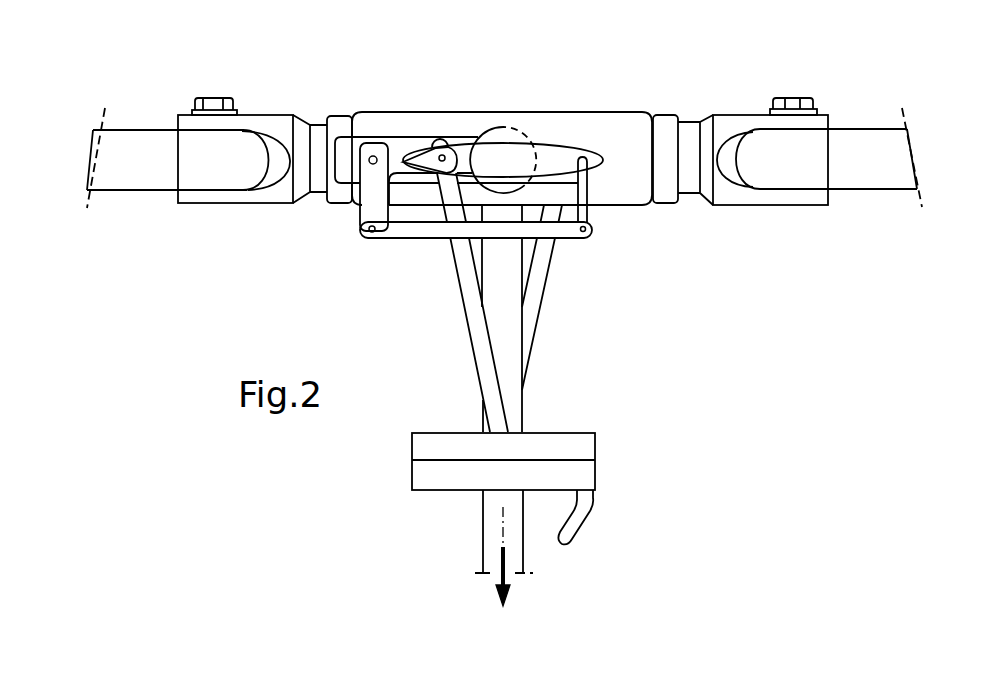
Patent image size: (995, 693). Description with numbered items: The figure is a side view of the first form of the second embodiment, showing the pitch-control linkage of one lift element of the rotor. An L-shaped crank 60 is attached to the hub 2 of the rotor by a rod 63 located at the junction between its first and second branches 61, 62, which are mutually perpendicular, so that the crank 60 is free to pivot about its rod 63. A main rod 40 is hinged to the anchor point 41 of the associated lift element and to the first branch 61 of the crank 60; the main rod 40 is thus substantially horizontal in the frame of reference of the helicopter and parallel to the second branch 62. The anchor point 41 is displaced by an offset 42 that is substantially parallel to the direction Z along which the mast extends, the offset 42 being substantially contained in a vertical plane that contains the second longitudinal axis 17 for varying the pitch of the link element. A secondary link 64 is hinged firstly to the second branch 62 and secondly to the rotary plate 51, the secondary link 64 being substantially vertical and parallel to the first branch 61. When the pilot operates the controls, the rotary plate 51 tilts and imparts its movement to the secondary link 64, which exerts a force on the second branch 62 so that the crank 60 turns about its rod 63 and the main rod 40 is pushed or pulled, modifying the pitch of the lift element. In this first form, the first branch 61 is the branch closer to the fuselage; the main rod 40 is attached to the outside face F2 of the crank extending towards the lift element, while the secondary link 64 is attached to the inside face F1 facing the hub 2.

The hub 2 is at (625, 112).
The second longitudinal axis 17 is at (518, 152).
The main rod 40 is at (423, 238).
The anchor point 41 is at (586, 228).
The offset 42 is at (587, 192).
The rotary plate 51 is at (590, 445).
The crank 60 is at (370, 132).
The first branch 61 is at (367, 215).
The second branch 62 is at (418, 152).
The rod 63 is at (366, 160).
The secondary link 64 is at (470, 327).
The inside face F1 is at (387, 152).
The outside face F2 is at (341, 207).
The direction Z is at (500, 513).